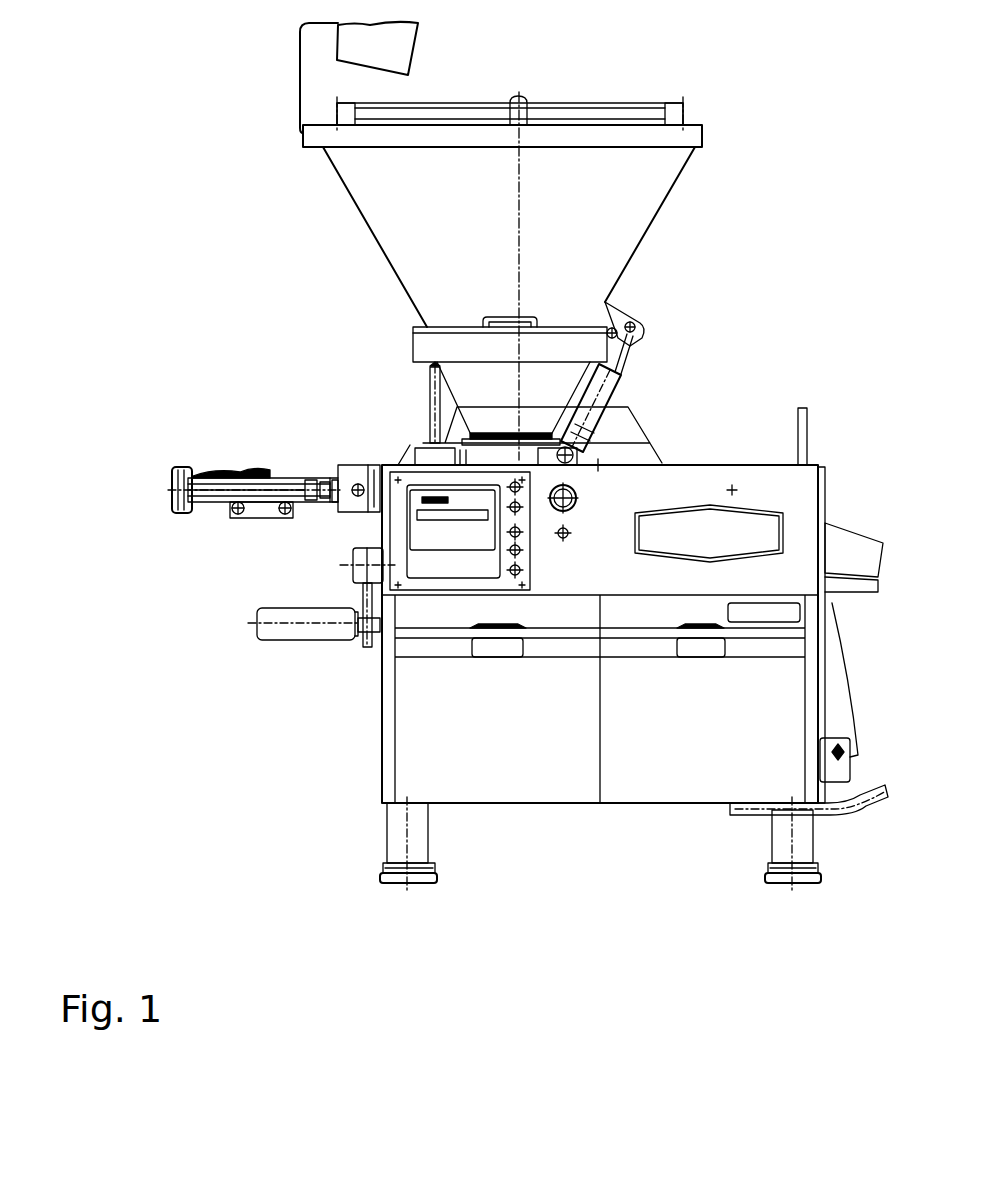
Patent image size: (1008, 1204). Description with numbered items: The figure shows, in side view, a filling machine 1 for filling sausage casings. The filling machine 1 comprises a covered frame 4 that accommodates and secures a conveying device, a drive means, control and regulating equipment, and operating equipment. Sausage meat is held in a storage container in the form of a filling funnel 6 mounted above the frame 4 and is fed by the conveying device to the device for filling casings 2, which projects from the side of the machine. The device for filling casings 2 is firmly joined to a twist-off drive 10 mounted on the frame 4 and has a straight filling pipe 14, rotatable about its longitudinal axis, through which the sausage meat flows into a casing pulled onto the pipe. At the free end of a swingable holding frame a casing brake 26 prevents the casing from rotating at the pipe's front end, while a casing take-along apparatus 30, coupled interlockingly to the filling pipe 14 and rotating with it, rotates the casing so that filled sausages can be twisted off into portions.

The filling machine 1 is at (733, 298).
The device for filling casings 2 is at (207, 440).
The covered frame 4 is at (430, 727).
The filling funnel 6 is at (582, 92).
The twist-off drive 10 is at (352, 455).
The filling pipe 14 is at (205, 495).
The casing brake 26 is at (162, 487).
The casing take-along apparatus 30 is at (310, 512).